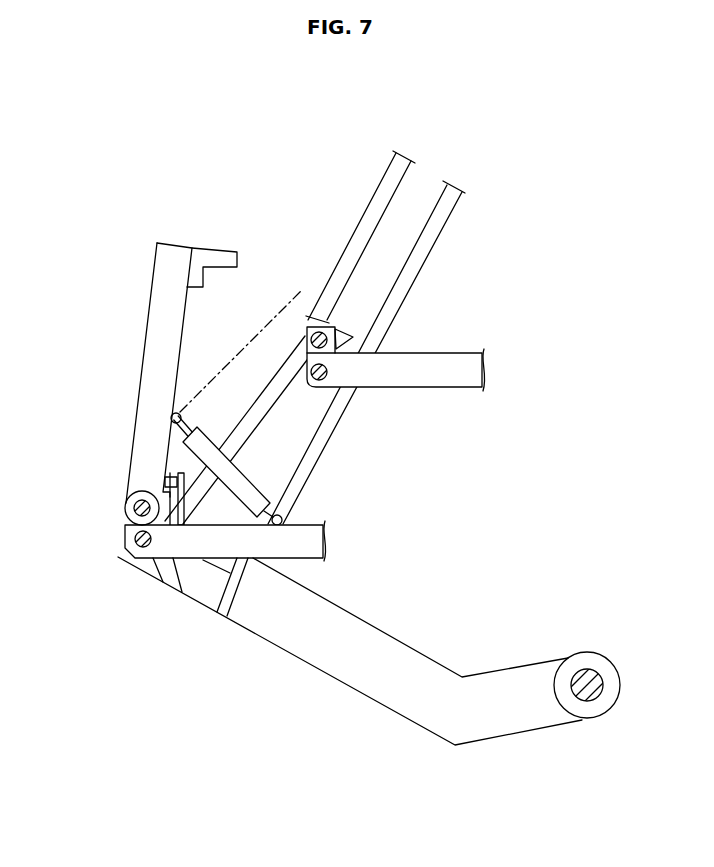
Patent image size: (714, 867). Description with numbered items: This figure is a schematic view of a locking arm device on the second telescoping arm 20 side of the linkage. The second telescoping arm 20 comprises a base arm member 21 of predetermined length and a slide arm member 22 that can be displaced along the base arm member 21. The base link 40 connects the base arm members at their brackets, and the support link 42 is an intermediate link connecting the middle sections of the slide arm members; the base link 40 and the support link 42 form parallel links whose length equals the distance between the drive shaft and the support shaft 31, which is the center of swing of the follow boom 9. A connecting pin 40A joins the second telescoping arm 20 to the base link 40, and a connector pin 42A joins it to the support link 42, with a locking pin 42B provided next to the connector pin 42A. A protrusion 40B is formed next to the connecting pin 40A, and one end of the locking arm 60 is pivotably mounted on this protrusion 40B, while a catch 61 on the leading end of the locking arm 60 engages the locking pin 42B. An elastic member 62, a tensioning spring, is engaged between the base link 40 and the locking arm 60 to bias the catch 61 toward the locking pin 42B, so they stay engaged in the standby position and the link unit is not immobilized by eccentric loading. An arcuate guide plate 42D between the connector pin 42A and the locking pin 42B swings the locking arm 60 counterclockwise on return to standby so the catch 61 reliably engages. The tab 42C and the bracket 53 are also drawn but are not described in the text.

The follow boom 9 is at (338, 668).
The second telescoping arm 20 is at (371, 317).
The base arm member 21 is at (387, 170).
The slide arm member 22 is at (384, 220).
The support shaft 31 is at (589, 702).
The base link 40 is at (176, 570).
The connecting pin 40A is at (121, 553).
The protrusion 40B is at (121, 511).
The support link 42 is at (386, 340).
The connector pin 42A is at (326, 386).
The locking pin 42B is at (311, 305).
The tab 42C is at (352, 334).
The arcuate guide plate 42D is at (300, 372).
The bracket 53 is at (162, 477).
The locking arm 60 is at (184, 361).
The catch 61 is at (213, 250).
The elastic member 62 is at (262, 486).